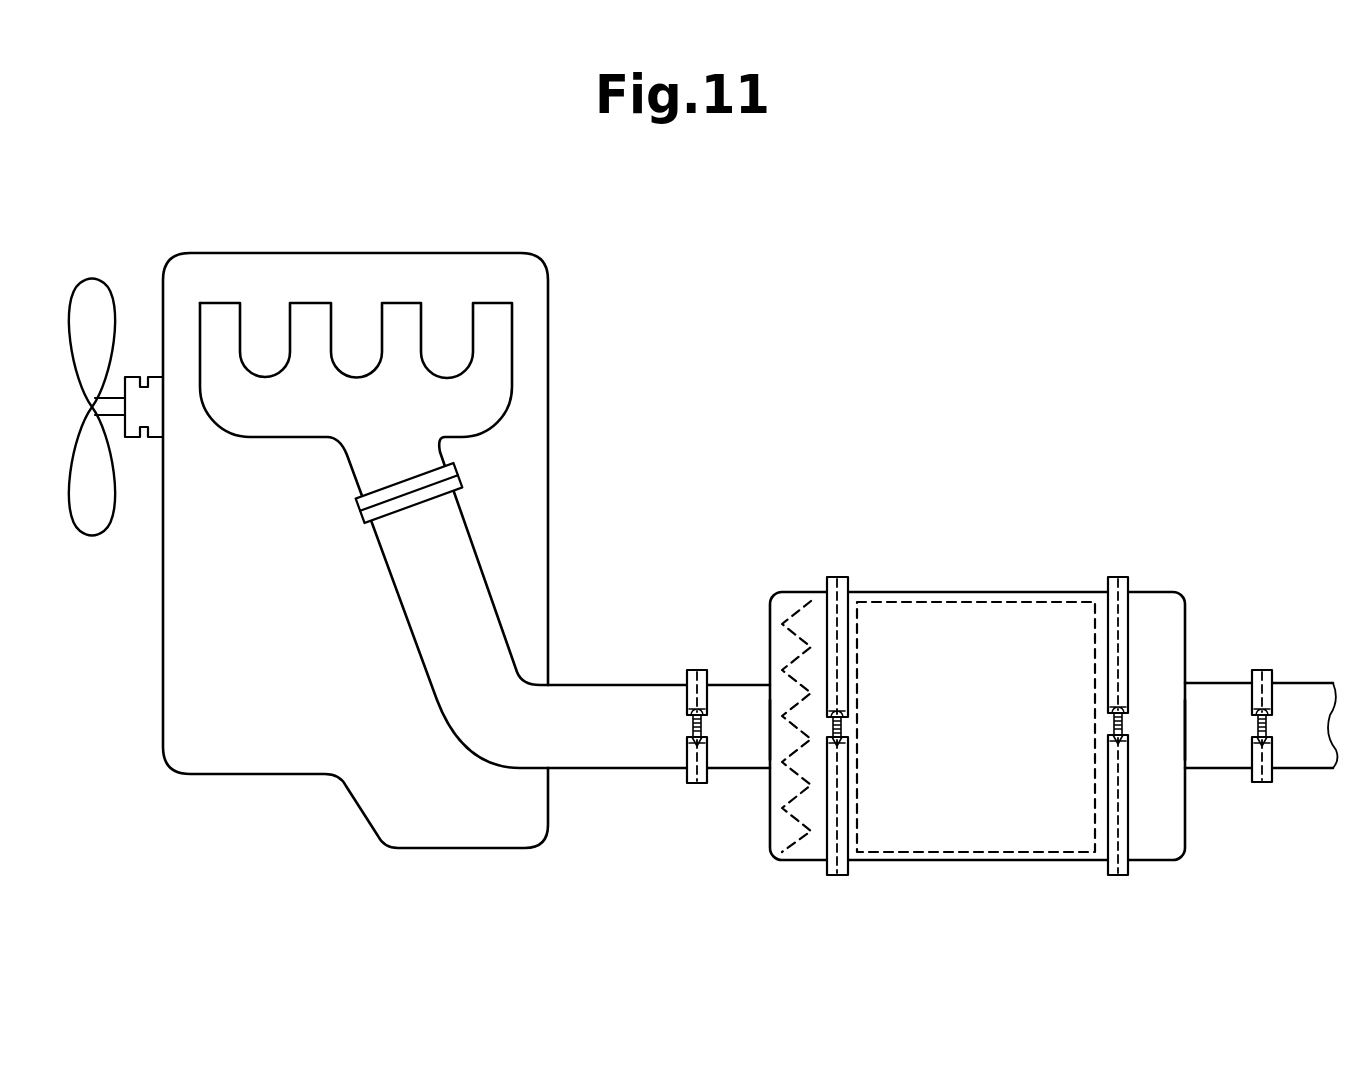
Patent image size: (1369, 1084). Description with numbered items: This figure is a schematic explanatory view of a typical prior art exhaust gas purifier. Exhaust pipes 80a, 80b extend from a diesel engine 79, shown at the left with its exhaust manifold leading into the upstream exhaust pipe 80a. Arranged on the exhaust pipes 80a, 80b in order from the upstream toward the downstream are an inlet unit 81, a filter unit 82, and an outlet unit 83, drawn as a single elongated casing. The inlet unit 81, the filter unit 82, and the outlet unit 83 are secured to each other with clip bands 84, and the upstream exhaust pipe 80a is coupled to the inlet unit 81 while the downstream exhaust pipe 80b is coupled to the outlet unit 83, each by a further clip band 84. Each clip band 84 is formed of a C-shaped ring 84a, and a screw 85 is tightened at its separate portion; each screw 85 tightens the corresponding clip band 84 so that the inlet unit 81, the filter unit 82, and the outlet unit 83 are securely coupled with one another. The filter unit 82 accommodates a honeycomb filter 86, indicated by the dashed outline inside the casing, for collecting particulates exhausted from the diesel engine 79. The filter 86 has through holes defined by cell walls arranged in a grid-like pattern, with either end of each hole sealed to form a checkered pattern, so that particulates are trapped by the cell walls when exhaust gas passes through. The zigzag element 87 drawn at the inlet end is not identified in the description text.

The diesel engine 79 is at (549, 336).
The upstream exhaust pipe 80a is at (594, 769).
The downstream exhaust pipe 80b is at (1305, 763).
The inlet unit 81 is at (812, 862).
The filter unit 82 is at (988, 862).
The outlet unit 83 is at (1162, 862).
The clip band 84 is at (697, 655).
The C-shaped ring 84a is at (707, 757).
The screw 85 is at (690, 725).
The honeycomb filter 86 is at (975, 598).
The catalyst element 87 is at (793, 598).